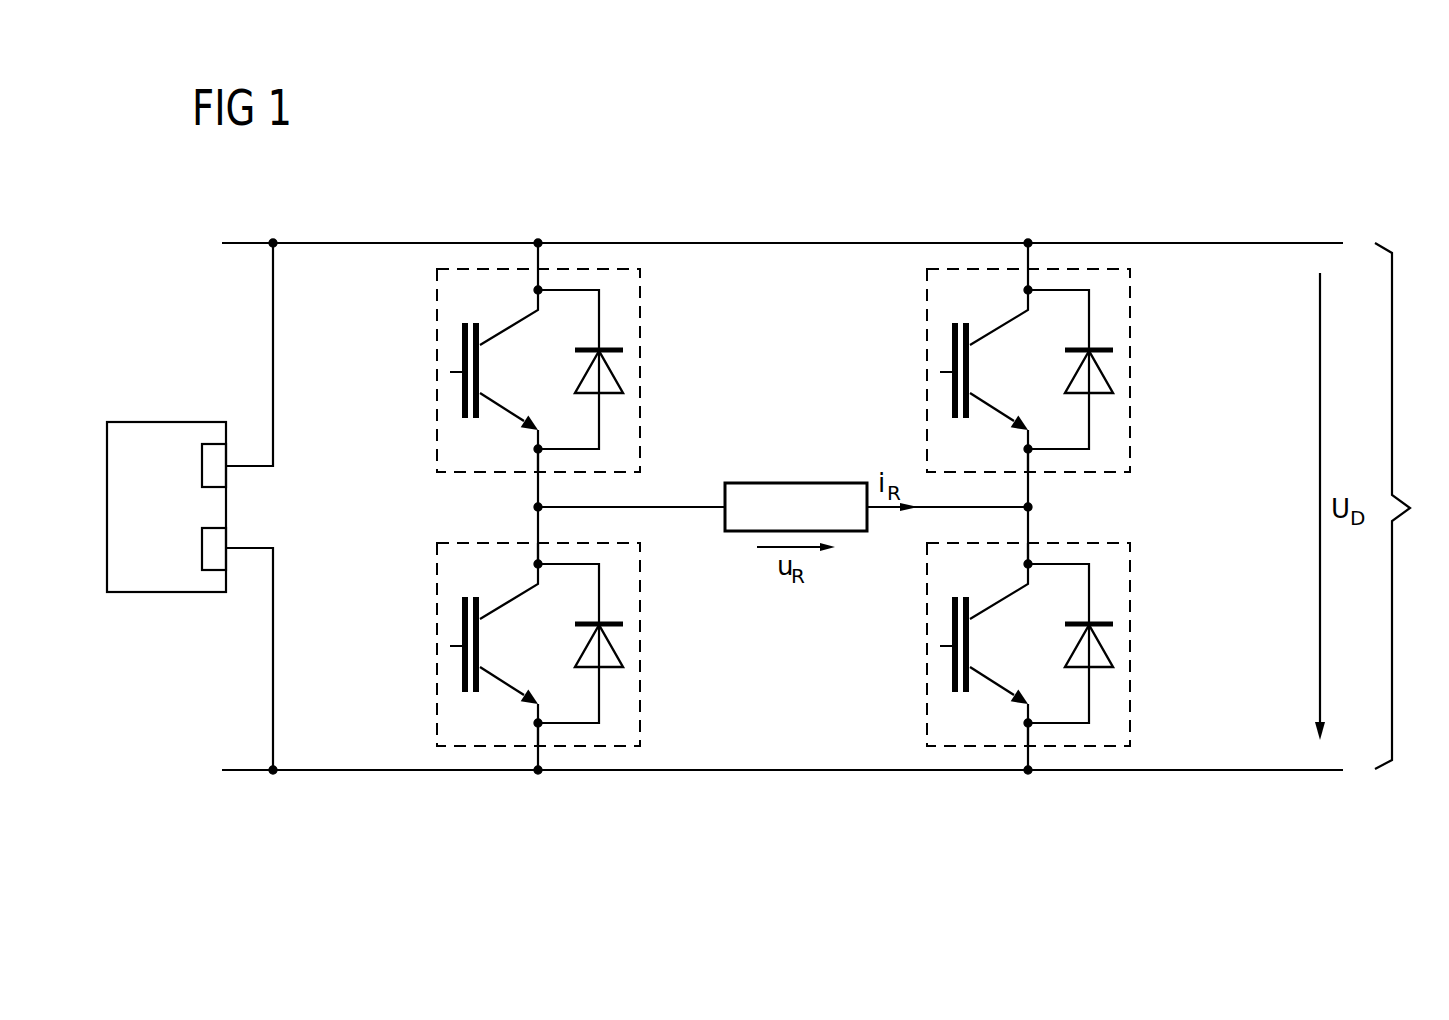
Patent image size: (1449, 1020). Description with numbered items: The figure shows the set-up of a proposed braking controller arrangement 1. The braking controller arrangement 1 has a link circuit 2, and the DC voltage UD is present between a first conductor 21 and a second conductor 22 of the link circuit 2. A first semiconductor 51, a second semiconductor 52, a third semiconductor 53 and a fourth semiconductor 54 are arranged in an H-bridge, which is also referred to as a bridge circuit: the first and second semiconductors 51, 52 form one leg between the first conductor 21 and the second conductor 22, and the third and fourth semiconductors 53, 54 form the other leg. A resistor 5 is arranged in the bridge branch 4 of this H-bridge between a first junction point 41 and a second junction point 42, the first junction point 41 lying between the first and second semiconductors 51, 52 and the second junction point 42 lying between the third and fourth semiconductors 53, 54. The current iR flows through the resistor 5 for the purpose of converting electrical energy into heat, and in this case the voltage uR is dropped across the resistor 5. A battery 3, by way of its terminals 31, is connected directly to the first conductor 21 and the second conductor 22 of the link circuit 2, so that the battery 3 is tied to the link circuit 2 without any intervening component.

The braking controller arrangement 1 is at (1212, 178).
The link circuit 2 is at (1402, 506).
The first conductor 21 is at (1288, 243).
The second conductor 22 is at (1288, 770).
The battery 3 is at (136, 422).
The terminals 31 is at (208, 444).
The bridge branch 4 is at (927, 510).
The first junction point 41 is at (538, 507).
The second junction point 42 is at (1030, 507).
The resistor 5 is at (774, 483).
The first semiconductor 51 is at (437, 332).
The second semiconductor 52 is at (437, 595).
The third semiconductor 53 is at (1130, 335).
The fourth semiconductor 54 is at (1130, 595).